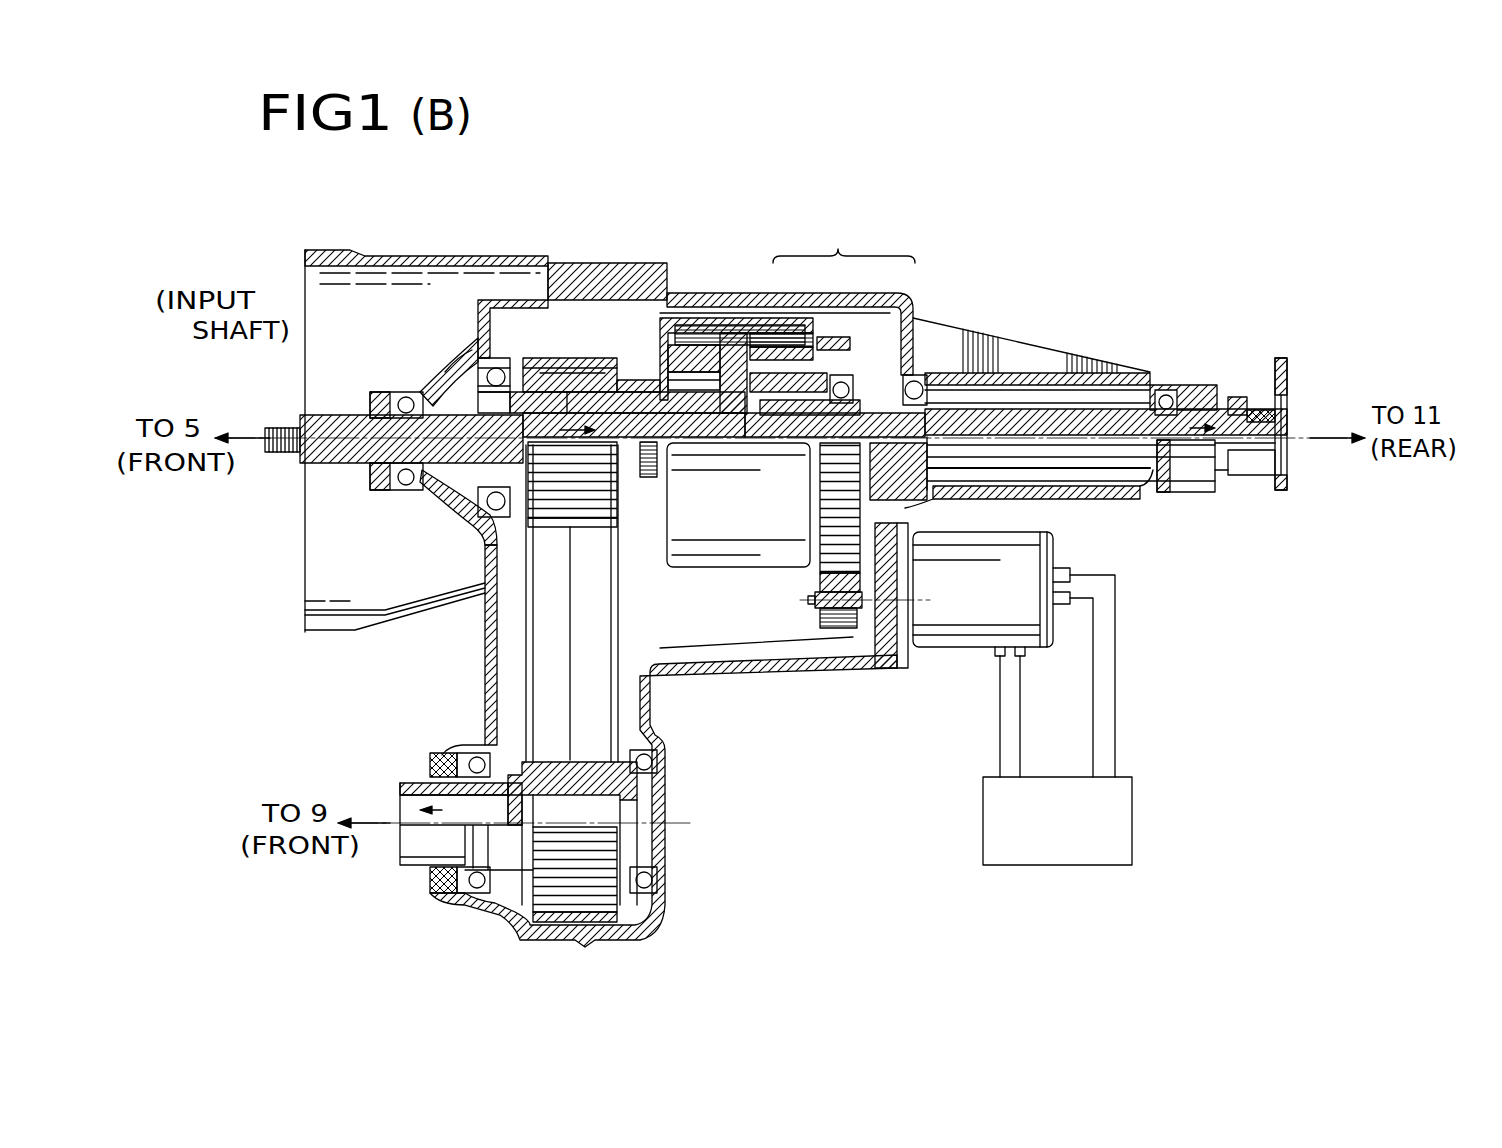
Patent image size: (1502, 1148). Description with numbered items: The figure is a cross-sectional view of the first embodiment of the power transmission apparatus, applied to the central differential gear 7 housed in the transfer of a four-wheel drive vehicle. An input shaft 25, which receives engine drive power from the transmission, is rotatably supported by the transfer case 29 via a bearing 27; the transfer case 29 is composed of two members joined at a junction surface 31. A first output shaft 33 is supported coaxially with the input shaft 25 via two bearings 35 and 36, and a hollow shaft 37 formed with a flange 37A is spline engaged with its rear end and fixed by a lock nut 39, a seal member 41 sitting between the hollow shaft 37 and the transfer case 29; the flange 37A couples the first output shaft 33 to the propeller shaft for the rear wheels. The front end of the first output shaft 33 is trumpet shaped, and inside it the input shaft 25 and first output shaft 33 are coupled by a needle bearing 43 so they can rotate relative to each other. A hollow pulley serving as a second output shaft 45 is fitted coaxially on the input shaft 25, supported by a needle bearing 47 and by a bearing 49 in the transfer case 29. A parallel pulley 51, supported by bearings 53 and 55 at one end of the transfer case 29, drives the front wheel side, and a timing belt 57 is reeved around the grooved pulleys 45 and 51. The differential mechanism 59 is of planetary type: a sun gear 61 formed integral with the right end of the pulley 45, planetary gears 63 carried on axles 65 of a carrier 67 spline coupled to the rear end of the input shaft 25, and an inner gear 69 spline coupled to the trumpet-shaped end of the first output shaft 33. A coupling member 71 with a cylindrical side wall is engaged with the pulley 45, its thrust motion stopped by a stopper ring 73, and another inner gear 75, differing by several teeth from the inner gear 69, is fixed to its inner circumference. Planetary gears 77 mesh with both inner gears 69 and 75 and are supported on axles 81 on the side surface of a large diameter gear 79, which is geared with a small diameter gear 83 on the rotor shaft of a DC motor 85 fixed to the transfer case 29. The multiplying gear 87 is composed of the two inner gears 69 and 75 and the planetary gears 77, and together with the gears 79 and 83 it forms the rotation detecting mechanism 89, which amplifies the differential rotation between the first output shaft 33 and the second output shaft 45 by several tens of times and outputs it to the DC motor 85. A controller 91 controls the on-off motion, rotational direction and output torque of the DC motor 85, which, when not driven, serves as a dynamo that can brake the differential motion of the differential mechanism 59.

The central differential gear 7 is at (893, 167).
The input shaft 25 is at (301, 418).
The bearing 27 is at (415, 392).
The transfer case 29 is at (642, 263).
The junction surface 31 is at (588, 358).
The first output shaft 33 is at (1100, 447).
The bearing 35 is at (927, 377).
The bearing 36 is at (1155, 385).
The hollow shaft 37 is at (1235, 397).
The flange 37A is at (1281, 358).
The lock nut 39 is at (1272, 418).
The seal member 41 is at (1180, 390).
The needle bearing 43 is at (805, 430).
The second output shaft 45 is at (592, 392).
The needle bearing 47 is at (690, 418).
The bearing 49 is at (488, 368).
The pulley 51 is at (585, 762).
The bearing 53 is at (477, 753).
The bearing 55 is at (660, 750).
The timing belt 57 is at (598, 610).
The differential mechanism 59 is at (747, 250).
The sun gear 61 is at (640, 380).
The planetary gears 63 is at (677, 318).
The axles 65 is at (703, 325).
The carrier 67 is at (722, 445).
The inner gear 69 is at (763, 333).
The coupling member 71 is at (852, 360).
The stopper ring 73 is at (663, 497).
The inner gear 75 is at (840, 296).
The planetary gears 77 is at (850, 335).
The large diameter gear 79 is at (913, 322).
The axles 81 is at (752, 372).
The small diameter gear 83 is at (840, 634).
The DC motor 85 is at (1040, 560).
The multiplying gear 87 is at (960, 233).
The rotation detecting mechanism 89 is at (972, 210).
The controller 91 is at (1122, 835).